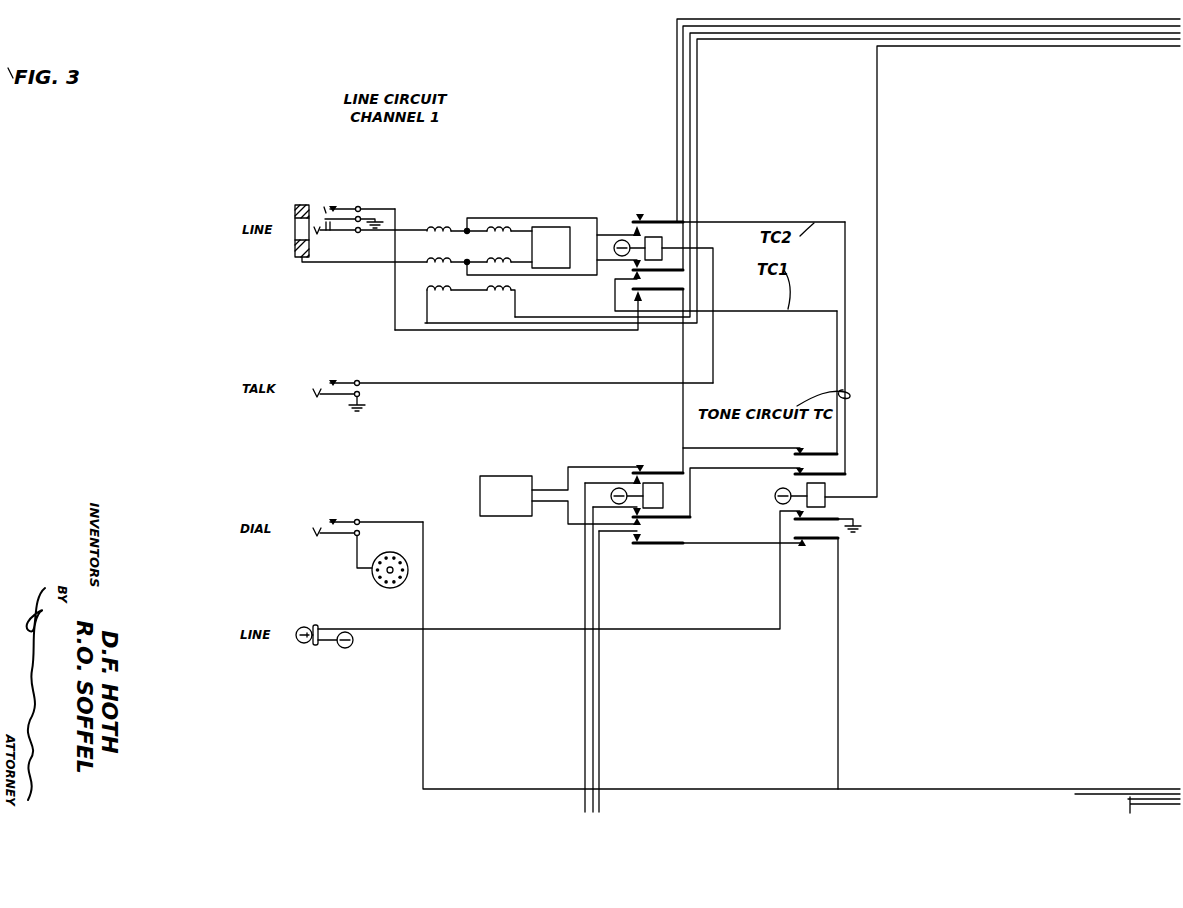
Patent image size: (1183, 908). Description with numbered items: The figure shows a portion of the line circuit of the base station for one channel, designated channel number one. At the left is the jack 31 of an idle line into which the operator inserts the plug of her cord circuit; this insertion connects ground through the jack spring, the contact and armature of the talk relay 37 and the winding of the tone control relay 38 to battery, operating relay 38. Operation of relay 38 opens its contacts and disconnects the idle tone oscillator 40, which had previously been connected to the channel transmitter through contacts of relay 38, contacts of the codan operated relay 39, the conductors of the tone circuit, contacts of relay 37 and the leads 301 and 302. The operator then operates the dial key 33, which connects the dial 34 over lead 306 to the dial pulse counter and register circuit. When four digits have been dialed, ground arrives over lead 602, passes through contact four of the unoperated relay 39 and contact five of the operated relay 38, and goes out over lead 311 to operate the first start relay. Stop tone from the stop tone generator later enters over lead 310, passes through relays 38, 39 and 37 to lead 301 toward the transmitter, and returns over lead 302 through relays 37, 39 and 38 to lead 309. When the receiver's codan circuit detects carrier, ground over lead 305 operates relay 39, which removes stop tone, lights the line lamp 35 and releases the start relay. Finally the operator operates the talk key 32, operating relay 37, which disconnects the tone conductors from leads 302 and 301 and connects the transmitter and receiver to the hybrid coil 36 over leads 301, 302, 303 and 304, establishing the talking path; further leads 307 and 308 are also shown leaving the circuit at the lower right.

The jack 31 is at (295, 207).
The talk key 32 is at (348, 393).
The dial key 33 is at (350, 532).
The dial 34 is at (381, 587).
The line lamp 35 is at (306, 646).
The hybrid coil 36 is at (463, 220).
The talk relay 37 is at (663, 246).
The tone control relay 38 is at (663, 493).
The codan operated relay 39 is at (807, 488).
The idle tone oscillator 40 is at (514, 476).
The lead 301 is at (677, 37).
The lead 302 is at (683, 58).
The lead 303 is at (1044, 34).
The lead 304 is at (1107, 40).
The lead 305 is at (1160, 46).
The lead 306 is at (1075, 789).
The conductor 307 is at (1160, 799).
The conductor 308 is at (1128, 807).
The lead 309 is at (584, 699).
The lead 310 is at (592, 721).
The lead 311 is at (600, 704).
The lead 602 is at (1115, 794).